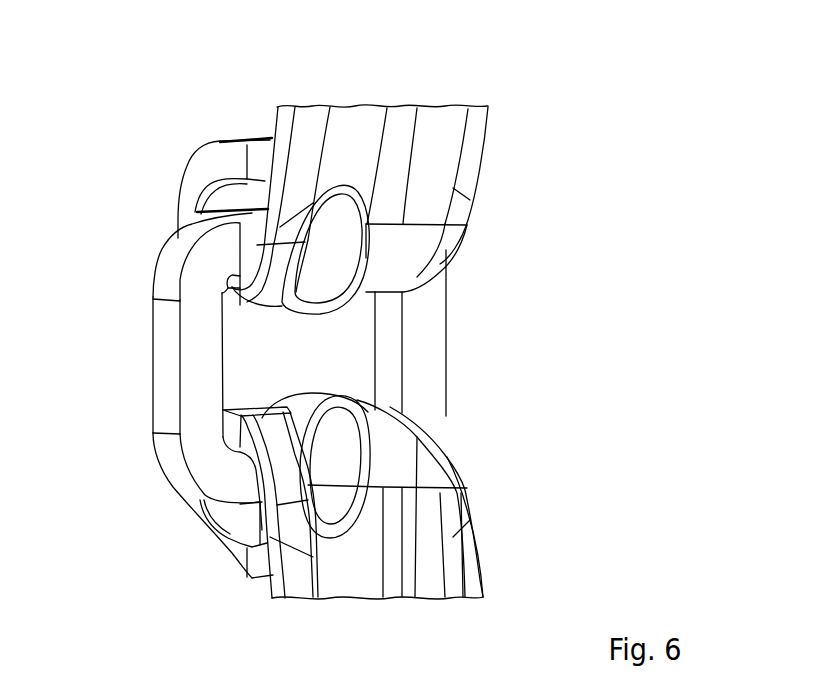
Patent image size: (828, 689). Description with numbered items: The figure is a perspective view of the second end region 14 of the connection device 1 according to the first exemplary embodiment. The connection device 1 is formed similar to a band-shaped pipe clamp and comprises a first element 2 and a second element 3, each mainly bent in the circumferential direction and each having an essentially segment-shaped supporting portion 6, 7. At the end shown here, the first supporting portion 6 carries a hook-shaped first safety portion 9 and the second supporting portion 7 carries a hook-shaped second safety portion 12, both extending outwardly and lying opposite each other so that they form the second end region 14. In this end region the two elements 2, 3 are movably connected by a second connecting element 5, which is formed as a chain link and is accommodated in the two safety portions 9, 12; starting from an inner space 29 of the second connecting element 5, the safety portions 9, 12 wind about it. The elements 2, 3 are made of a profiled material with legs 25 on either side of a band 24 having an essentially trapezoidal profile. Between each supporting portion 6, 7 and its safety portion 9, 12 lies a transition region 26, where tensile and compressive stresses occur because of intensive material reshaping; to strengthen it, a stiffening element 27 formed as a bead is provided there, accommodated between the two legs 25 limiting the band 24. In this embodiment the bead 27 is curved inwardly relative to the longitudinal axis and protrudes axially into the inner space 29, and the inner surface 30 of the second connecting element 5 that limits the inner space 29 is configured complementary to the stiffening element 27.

The connection device 1 is at (640, 148).
The first element 2 is at (491, 158).
The second element 3 is at (494, 553).
The second connecting element 5 is at (145, 348).
The first supporting portion 6 is at (360, 206).
The second supporting portion 7 is at (353, 503).
The first safety portion 9 is at (190, 190).
The second safety portion 12 is at (197, 520).
The second end region 14 is at (165, 133).
The band 24 is at (357, 598).
The legs 25 is at (304, 597).
The transition region 26 is at (486, 245).
The stiffening element 27 is at (340, 264).
The inner space 29 is at (330, 361).
The inner surface 30 is at (232, 291).